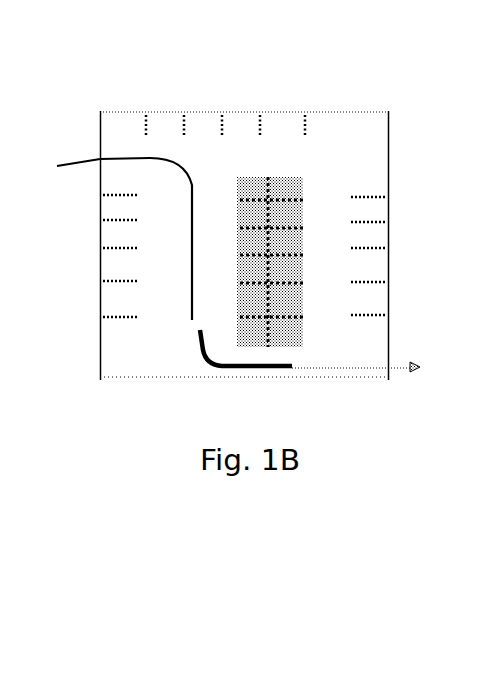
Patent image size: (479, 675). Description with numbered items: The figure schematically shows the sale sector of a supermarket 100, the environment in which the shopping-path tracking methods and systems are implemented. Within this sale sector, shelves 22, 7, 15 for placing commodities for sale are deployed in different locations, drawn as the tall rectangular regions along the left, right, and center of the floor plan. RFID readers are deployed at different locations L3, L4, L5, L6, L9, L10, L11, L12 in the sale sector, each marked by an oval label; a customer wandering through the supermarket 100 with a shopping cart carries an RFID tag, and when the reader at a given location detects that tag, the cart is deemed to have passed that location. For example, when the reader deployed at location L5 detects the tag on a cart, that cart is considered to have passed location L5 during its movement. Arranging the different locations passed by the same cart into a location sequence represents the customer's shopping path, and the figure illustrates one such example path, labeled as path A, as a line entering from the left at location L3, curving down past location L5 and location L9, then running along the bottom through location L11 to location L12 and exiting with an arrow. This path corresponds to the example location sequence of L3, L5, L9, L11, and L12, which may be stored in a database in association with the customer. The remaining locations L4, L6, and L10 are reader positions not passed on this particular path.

The supermarket 100 is at (244, 231).
The shelf 22 is at (120, 256).
The shelf 7 is at (369, 256).
The shelf 15 is at (367, 334).
The location L3 is at (138, 235).
The location L4 is at (270, 248).
The location L5 is at (190, 193).
The location L6 is at (372, 158).
The location L9 is at (238, 340).
The location L10 is at (117, 367).
The location L11 is at (336, 366).
The location L12 is at (388, 367).